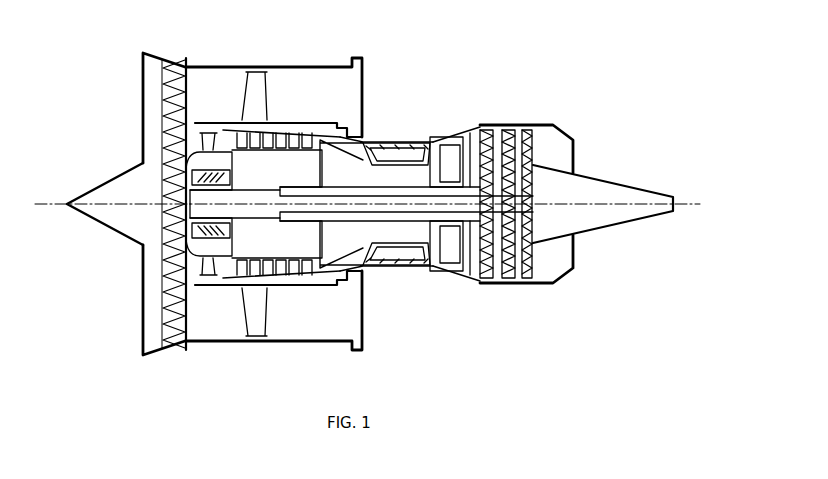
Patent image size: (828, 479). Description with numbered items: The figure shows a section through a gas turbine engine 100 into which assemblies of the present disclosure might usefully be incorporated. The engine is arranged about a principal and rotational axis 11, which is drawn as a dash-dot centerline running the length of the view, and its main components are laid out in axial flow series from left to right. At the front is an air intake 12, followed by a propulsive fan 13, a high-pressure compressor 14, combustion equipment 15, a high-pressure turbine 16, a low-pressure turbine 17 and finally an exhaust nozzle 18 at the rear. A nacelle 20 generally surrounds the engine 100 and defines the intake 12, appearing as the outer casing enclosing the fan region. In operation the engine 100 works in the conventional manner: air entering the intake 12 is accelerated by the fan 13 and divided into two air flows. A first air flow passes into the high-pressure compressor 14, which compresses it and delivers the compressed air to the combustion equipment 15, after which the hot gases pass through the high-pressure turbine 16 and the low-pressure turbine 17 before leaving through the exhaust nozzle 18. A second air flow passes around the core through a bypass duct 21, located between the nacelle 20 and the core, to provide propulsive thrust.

The gas turbine engine 100 is at (434, 104).
The principal and rotational axis 11 is at (80, 217).
The air intake 12 is at (143, 100).
The propulsive fan 13 is at (183, 65).
The high-pressure compressor 14 is at (307, 155).
The combustion equipment 15 is at (388, 148).
The high-pressure turbine 16 is at (481, 126).
The low-pressure turbine 17 is at (536, 160).
The exhaust nozzle 18 is at (565, 158).
The nacelle 20 is at (218, 345).
The bypass duct 21 is at (295, 328).